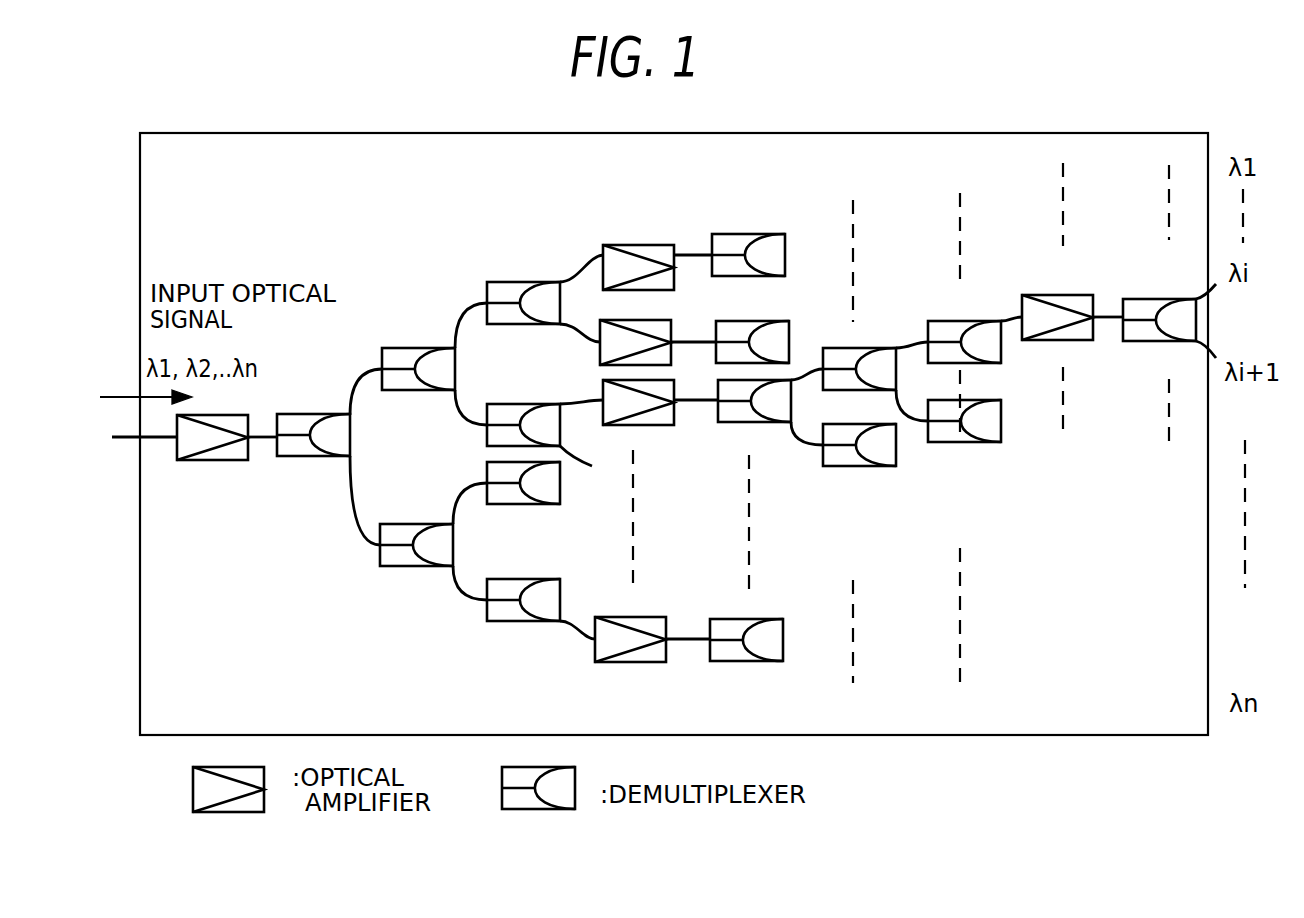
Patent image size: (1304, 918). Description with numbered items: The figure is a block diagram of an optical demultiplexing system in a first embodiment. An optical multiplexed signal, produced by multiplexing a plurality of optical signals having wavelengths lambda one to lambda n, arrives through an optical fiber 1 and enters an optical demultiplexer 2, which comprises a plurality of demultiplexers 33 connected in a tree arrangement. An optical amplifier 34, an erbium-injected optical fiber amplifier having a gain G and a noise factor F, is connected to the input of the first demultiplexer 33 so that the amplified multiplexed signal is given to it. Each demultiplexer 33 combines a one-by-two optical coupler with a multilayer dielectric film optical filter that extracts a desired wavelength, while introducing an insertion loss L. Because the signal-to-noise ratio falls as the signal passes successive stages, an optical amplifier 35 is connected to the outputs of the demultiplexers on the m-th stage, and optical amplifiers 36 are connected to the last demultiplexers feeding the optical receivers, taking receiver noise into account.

The optical fiber 1 is at (118, 440).
The optical demultiplexer 2 is at (512, 133).
The demultiplexer 33 is at (297, 456).
The optical amplifier 34 is at (213, 461).
The optical amplifier 35 is at (650, 245).
The optical amplifier 36 is at (1065, 295).